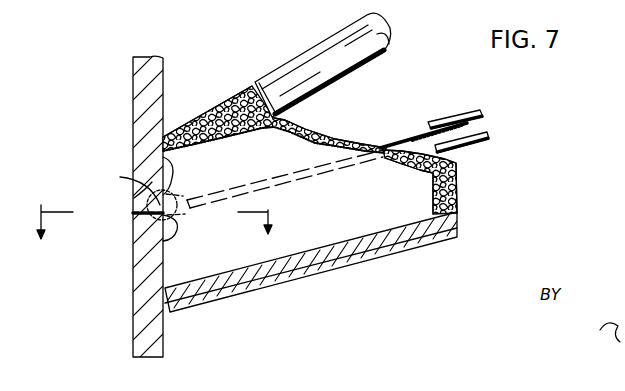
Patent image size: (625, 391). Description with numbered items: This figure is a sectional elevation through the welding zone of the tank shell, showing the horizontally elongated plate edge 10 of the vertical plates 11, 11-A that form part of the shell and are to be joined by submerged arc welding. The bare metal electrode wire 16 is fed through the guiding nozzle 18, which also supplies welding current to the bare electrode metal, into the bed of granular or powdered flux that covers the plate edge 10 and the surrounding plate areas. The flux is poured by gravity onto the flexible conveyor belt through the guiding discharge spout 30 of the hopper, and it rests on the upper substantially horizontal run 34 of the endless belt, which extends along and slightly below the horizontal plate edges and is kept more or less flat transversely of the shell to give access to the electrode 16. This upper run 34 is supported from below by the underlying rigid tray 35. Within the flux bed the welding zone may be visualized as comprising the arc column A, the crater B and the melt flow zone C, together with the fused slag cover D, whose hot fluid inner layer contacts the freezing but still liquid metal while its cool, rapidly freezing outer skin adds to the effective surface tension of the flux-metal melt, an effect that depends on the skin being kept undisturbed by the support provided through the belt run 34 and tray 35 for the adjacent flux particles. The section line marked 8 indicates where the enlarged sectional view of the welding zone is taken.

The vertical plate 11 is at (133, 275).
The vertical plate 11-A is at (133, 86).
The guiding discharge spout 30 is at (288, 60).
The bare metal electrode wire 16 is at (403, 138).
The guiding nozzle 18 is at (447, 121).
The upper run of the belt 34 is at (462, 220).
The tray 35 is at (432, 246).
The fused slag cover D is at (163, 157).
The arc column A is at (120, 177).
The plate edge 10 is at (133, 198).
The melt flow zone C is at (133, 219).
The crater B is at (162, 237).
The section line 8- 8 is at (154, 232).